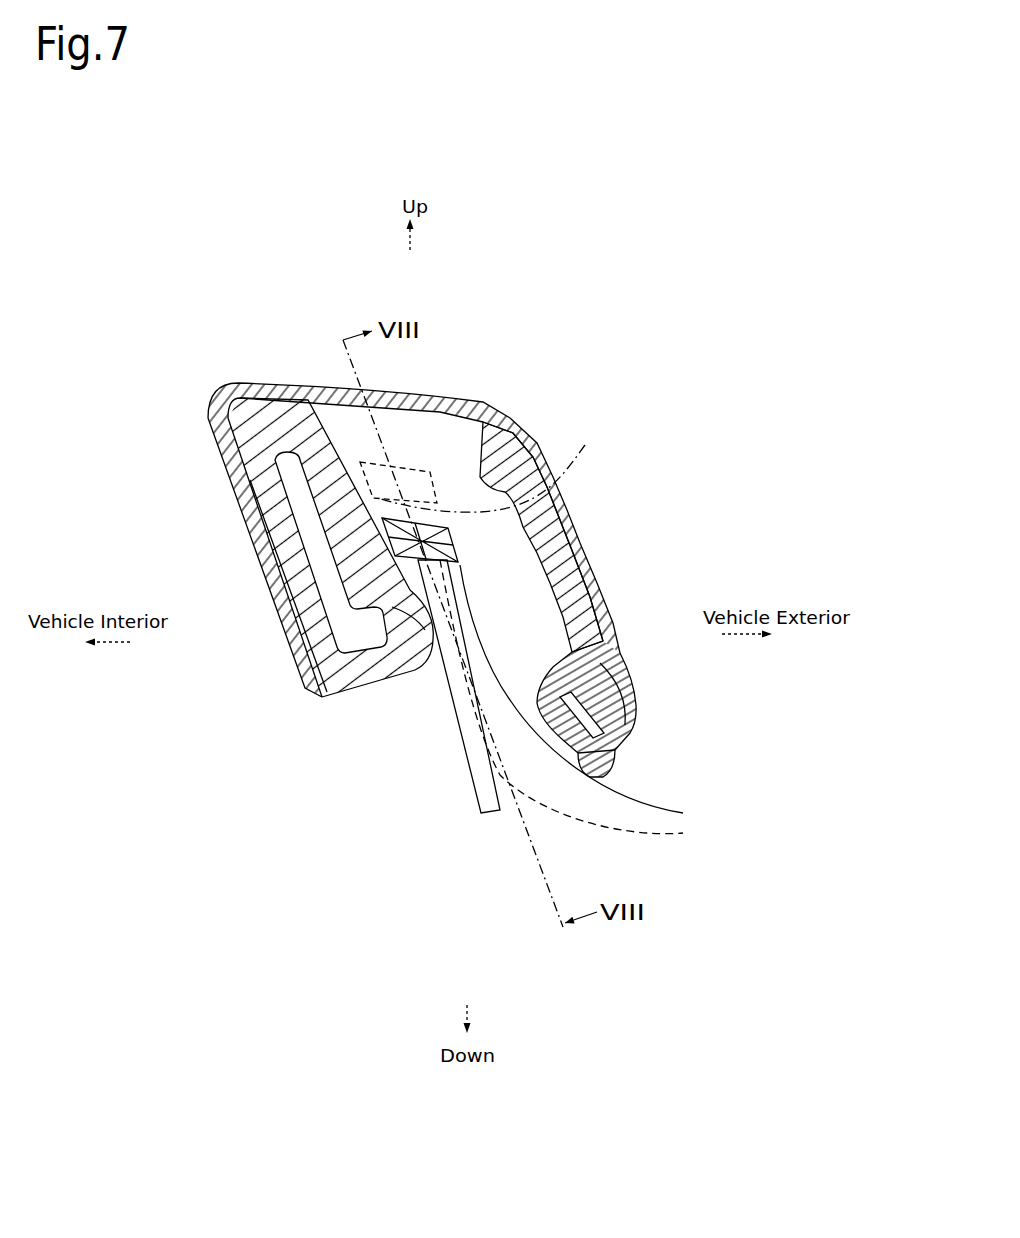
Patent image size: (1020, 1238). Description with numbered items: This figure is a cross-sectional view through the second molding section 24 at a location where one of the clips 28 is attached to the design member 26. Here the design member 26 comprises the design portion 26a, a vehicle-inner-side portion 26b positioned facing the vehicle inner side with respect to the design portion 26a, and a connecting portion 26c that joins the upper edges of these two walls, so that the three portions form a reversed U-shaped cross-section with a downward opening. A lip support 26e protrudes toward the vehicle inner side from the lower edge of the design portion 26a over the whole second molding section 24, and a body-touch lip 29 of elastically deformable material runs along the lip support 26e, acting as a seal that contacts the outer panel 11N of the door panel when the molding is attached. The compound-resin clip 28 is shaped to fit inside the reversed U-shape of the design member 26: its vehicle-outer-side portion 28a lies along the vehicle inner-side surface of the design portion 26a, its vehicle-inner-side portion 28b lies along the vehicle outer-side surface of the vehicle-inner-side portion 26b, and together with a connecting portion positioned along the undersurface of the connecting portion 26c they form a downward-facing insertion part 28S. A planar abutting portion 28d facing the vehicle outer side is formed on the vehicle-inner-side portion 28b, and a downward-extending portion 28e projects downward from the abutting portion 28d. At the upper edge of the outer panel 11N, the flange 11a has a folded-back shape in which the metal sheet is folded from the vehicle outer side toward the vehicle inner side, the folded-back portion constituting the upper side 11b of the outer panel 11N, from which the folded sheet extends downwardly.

The second molding section 24 is at (499, 358).
The design member 26 is at (228, 380).
The design portion 26a is at (580, 556).
The vehicle-inner-side portion 26b is at (232, 497).
The connecting portion 26c is at (428, 396).
The lip support 26e is at (592, 712).
The clip 28 is at (398, 735).
The vehicle-outer-side portion 28a is at (500, 563).
The vehicle-inner-side portion 28b is at (300, 622).
The abutting portion 28d is at (425, 662).
The downward-extending portion 28e is at (433, 770).
The insertion part 28S is at (550, 527).
The body-touch lip 29 is at (610, 768).
The flange 11a is at (470, 623).
The upper side 11b is at (504, 472).
The outer panel 11N is at (667, 845).